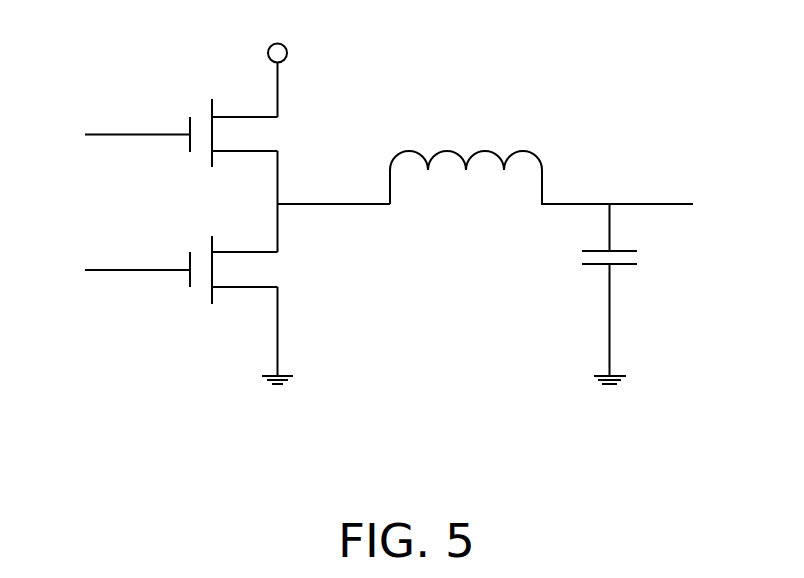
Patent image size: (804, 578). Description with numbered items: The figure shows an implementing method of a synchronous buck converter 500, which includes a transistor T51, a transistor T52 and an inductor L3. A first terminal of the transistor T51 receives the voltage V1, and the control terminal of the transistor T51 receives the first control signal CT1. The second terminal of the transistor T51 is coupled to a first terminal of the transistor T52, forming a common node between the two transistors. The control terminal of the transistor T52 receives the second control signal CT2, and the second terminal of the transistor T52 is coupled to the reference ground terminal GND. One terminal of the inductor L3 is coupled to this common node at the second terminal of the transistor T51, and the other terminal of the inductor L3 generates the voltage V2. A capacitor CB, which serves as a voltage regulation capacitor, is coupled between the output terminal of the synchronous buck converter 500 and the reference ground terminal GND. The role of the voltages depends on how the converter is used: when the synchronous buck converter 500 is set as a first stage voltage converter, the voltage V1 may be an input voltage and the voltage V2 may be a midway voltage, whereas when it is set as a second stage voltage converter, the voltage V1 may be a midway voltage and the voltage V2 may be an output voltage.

The synchronous buck converter 500 is at (770, 479).
The transistor T51 is at (252, 133).
The transistor T52 is at (252, 270).
The first control signal CT1 is at (116, 134).
The second control signal CT2 is at (116, 270).
The voltage V1 is at (277, 62).
The voltage V2 is at (712, 203).
The inductor L3 is at (541, 155).
The capacitor CB is at (627, 290).
The reference ground terminal GND is at (447, 355).